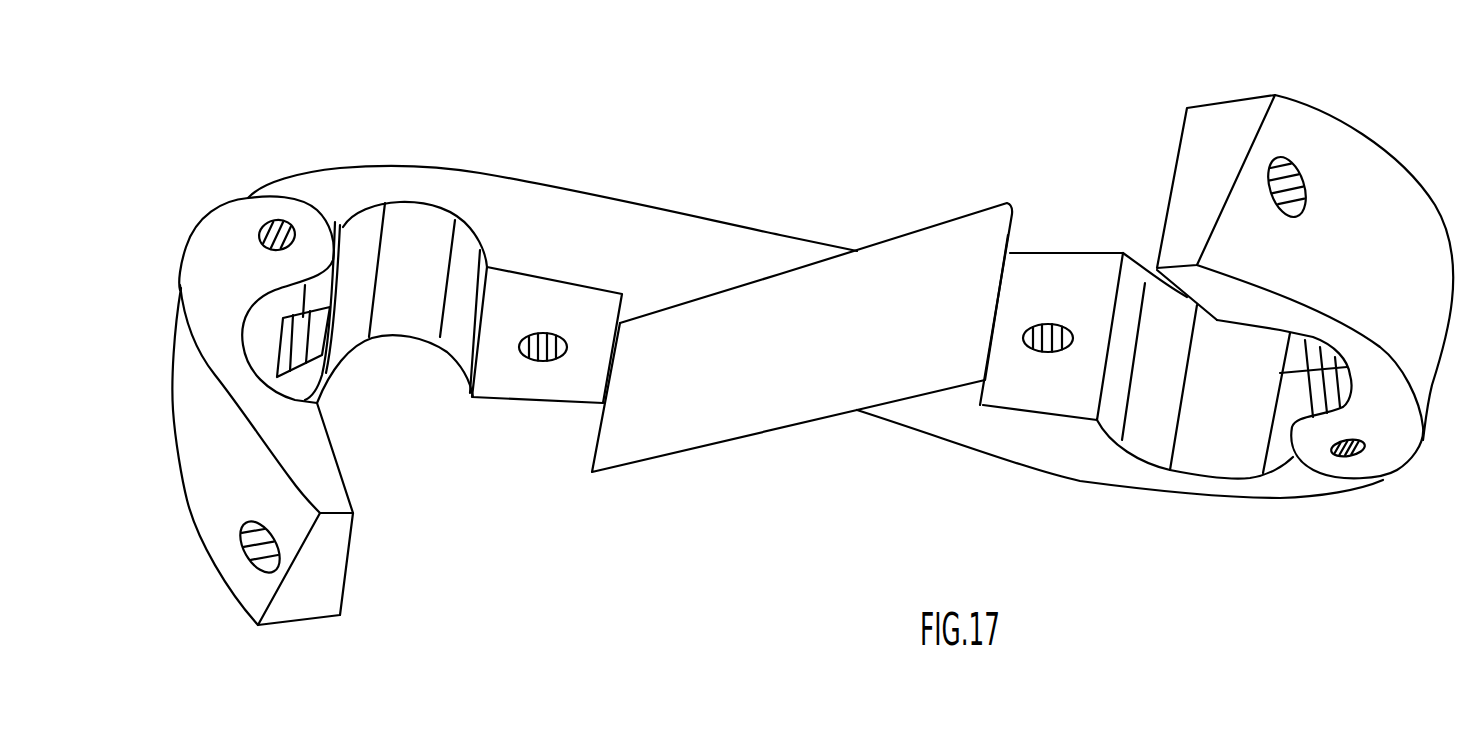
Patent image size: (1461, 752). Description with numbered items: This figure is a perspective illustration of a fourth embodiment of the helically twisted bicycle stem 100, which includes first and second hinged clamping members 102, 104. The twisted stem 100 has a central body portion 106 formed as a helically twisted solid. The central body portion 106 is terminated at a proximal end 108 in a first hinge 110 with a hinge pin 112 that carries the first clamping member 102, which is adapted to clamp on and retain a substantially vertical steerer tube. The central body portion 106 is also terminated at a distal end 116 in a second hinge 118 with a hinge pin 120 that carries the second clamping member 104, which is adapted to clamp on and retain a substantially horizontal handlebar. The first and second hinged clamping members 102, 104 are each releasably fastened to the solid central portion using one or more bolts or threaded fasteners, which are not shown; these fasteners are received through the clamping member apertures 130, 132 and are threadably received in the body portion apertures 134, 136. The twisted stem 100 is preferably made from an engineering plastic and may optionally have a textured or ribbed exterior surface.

The helically twisted bicycle stem 100 is at (690, 180).
The first hinged clamping member 102 is at (320, 583).
The second hinged clamping member 104 is at (1238, 132).
The central body portion 106 is at (712, 383).
The proximal end 108 is at (240, 188).
The first hinge 110 is at (313, 330).
The hinge pin 112 is at (288, 227).
The distal end 116 is at (1388, 490).
The second hinge 118 is at (1290, 373).
The hinge pin 120 is at (1347, 453).
The clamping member aperture 130 is at (247, 560).
The clamping member aperture 132 is at (1290, 177).
The body portion aperture 134 is at (540, 357).
The body portion aperture 136 is at (1048, 330).